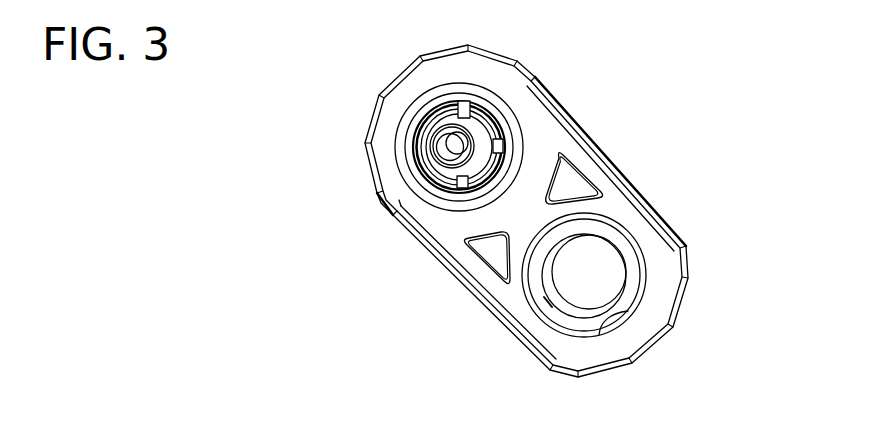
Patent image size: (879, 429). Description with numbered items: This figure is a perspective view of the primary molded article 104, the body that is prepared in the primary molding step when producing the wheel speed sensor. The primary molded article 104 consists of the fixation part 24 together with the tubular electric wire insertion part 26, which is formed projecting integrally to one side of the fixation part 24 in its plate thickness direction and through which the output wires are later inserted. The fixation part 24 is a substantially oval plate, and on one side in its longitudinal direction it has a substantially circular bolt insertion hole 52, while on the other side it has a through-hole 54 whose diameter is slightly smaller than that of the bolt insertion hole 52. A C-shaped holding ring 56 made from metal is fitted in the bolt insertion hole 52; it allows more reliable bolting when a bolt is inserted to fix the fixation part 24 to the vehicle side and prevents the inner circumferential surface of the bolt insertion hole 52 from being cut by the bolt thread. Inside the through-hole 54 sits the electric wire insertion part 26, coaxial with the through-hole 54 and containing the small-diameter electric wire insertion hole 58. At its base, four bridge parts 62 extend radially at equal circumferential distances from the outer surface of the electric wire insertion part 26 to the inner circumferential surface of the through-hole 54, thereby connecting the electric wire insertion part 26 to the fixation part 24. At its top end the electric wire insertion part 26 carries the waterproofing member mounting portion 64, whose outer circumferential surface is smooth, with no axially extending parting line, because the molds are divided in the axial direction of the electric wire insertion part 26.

The primary molded article 104 is at (578, 44).
The fixation part 24 is at (618, 208).
The through-hole 54 is at (492, 118).
The bridge parts 62 is at (503, 146).
The electric wire insertion hole 58 is at (438, 142).
The electric wire insertion part 26 is at (480, 163).
The waterproofing member mounting portion 64 is at (574, 152).
The holding ring 56 is at (620, 250).
The bolt insertion hole 52 is at (603, 328).